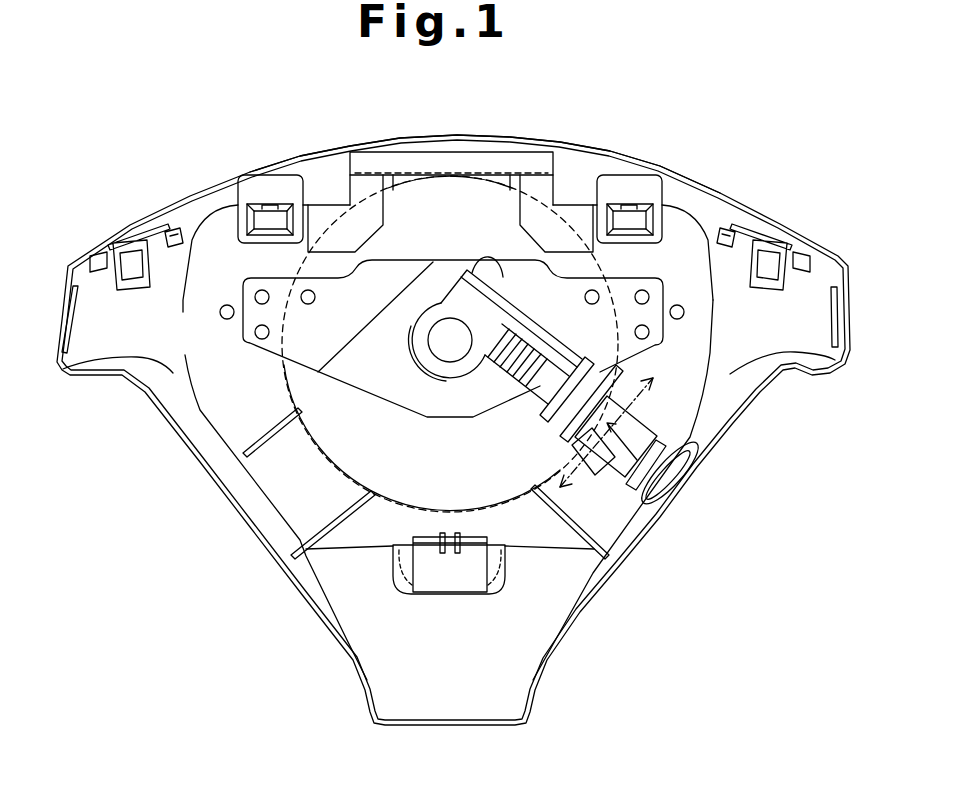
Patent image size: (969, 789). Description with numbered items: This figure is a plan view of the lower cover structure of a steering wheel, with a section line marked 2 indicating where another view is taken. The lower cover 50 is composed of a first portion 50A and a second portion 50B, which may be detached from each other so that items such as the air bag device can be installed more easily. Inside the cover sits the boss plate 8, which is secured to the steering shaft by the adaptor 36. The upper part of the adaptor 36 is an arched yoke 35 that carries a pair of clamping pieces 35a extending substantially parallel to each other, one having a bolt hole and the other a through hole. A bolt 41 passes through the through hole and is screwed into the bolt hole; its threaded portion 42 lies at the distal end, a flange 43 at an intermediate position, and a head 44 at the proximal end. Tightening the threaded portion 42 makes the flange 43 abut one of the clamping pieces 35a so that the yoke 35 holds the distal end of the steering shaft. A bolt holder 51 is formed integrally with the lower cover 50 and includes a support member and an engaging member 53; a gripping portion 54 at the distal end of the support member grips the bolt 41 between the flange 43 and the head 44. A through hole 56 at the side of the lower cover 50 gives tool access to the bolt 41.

The boss plate 8 is at (337, 380).
The yoke 35 is at (420, 292).
The clamping pieces 35a is at (456, 288).
The adaptor 36 is at (407, 355).
The bolt 41 is at (511, 395).
The threaded portion 42 is at (510, 368).
The flange 43 is at (552, 421).
The head 44 is at (668, 441).
The lower cover 50 is at (887, 225).
The first portion 50A is at (750, 211).
The second portion 50B is at (849, 305).
The bolt holder 51 is at (680, 481).
The engaging member 53 is at (622, 392).
The gripping portion 54 is at (578, 447).
The through hole 56 is at (661, 490).
The section line of FIG. 2 is at (621, 438).